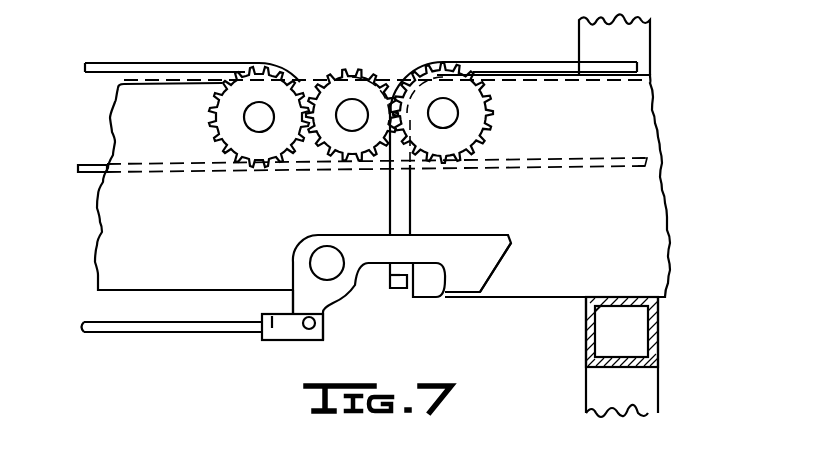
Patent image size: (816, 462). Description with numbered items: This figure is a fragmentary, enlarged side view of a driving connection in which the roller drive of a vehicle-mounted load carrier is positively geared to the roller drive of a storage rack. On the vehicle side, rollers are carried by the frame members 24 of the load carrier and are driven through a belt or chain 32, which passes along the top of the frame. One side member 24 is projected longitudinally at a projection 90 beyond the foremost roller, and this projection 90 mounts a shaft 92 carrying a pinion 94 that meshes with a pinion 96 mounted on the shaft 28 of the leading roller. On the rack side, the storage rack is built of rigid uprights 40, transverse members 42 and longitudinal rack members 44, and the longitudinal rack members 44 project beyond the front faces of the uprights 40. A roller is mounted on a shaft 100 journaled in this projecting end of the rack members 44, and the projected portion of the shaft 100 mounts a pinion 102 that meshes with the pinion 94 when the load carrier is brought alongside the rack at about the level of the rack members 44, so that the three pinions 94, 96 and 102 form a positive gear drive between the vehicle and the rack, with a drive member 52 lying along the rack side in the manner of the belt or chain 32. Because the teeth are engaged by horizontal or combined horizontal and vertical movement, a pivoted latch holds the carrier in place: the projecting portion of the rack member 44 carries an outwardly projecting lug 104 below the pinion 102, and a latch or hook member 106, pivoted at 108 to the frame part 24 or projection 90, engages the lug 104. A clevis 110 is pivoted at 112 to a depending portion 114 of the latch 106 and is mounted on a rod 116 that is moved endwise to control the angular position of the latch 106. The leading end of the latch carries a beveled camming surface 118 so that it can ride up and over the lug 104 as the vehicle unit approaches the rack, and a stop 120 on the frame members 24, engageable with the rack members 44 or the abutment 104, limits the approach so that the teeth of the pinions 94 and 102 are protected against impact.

The frame member 24 is at (104, 232).
The shaft 28 is at (258, 120).
The belt or chain 32 is at (186, 56).
The upright 40 is at (650, 40).
The transverse member 42 is at (658, 326).
The longitudinal rack member 44 is at (660, 243).
The rack bar 52 is at (525, 62).
The projection 90 is at (372, 272).
The shaft 92 is at (351, 132).
The pinion 94 is at (324, 153).
The pinion 96 is at (261, 162).
The shaft 100 is at (452, 113).
The pinion 102 is at (441, 162).
The lug 104 is at (433, 292).
The latch 106 is at (482, 244).
The pivot 108 is at (327, 263).
The clevis 110 is at (286, 333).
The pivot 112 is at (312, 331).
The depending portion 114 is at (293, 303).
The rod 116 is at (170, 333).
The camming surface 118 is at (502, 267).
The stop 120 is at (400, 288).